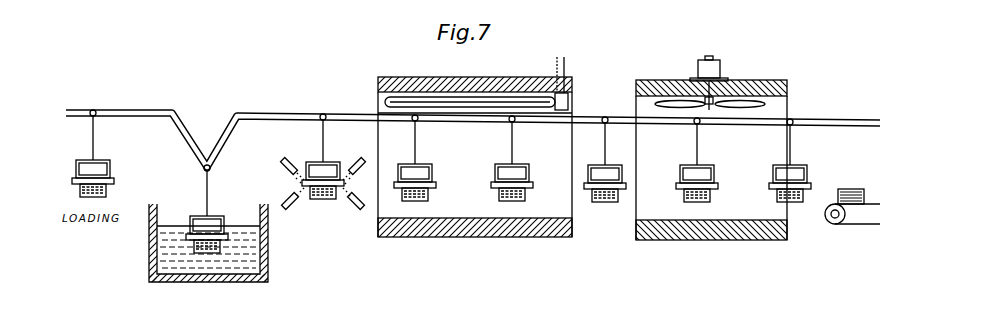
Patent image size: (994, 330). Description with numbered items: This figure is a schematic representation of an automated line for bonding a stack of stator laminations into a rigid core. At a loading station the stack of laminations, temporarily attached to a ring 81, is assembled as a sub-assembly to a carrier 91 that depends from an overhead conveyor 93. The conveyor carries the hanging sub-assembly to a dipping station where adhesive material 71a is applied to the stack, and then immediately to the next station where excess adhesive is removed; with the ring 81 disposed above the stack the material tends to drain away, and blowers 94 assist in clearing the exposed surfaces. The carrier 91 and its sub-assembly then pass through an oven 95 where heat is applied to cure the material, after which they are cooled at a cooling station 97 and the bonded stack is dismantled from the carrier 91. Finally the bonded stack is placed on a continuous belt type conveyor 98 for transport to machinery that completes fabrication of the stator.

The overhead conveyor 93 is at (158, 109).
The carrier 91 is at (100, 160).
The ring 81 is at (114, 181).
The material 71a is at (243, 262).
The blowers 94 is at (354, 160).
The oven 95 is at (406, 78).
The cooling station 97 is at (668, 80).
The continuous belt type conveyor 98 is at (870, 203).